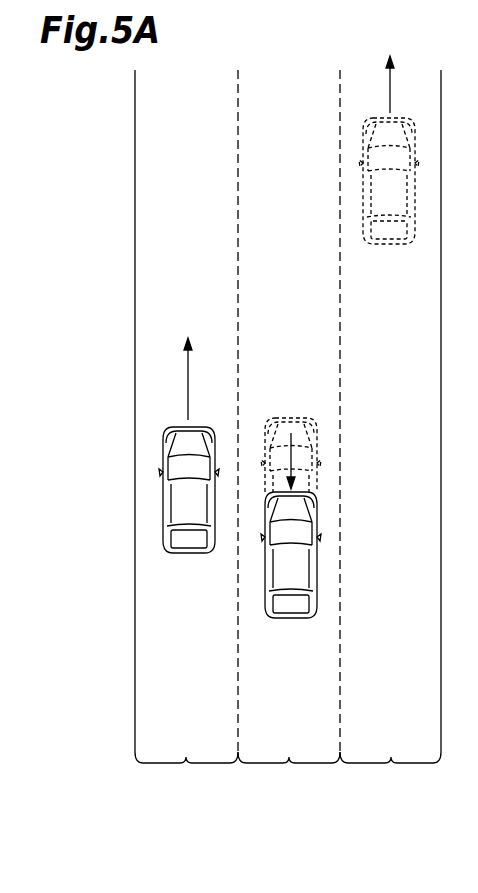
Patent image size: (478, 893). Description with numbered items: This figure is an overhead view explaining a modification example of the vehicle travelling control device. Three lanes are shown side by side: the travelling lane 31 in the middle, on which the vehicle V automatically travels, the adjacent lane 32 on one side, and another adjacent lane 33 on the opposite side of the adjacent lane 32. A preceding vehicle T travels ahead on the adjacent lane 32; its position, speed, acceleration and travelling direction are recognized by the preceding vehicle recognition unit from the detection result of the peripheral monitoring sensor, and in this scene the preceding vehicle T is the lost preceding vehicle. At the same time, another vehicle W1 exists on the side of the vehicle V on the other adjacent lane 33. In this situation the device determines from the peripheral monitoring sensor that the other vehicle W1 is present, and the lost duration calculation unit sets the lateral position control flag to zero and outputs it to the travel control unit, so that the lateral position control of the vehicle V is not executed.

The another vehicle W1 is at (165, 493).
The vehicle V is at (292, 618).
The preceding vehicle T is at (395, 247).
The travelling lane 31 is at (289, 432).
The adjacent lane 32 is at (390, 432).
The another adjacent lane 33 is at (186, 432).